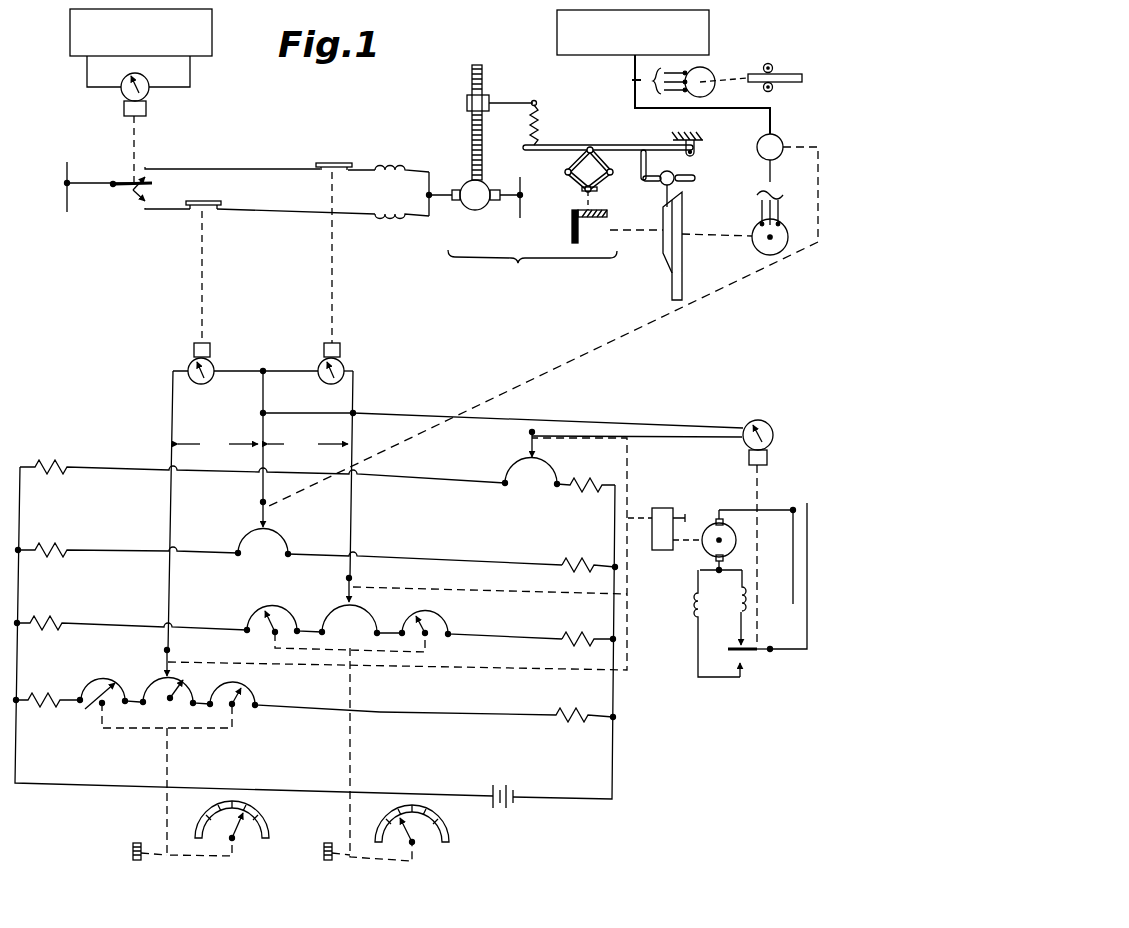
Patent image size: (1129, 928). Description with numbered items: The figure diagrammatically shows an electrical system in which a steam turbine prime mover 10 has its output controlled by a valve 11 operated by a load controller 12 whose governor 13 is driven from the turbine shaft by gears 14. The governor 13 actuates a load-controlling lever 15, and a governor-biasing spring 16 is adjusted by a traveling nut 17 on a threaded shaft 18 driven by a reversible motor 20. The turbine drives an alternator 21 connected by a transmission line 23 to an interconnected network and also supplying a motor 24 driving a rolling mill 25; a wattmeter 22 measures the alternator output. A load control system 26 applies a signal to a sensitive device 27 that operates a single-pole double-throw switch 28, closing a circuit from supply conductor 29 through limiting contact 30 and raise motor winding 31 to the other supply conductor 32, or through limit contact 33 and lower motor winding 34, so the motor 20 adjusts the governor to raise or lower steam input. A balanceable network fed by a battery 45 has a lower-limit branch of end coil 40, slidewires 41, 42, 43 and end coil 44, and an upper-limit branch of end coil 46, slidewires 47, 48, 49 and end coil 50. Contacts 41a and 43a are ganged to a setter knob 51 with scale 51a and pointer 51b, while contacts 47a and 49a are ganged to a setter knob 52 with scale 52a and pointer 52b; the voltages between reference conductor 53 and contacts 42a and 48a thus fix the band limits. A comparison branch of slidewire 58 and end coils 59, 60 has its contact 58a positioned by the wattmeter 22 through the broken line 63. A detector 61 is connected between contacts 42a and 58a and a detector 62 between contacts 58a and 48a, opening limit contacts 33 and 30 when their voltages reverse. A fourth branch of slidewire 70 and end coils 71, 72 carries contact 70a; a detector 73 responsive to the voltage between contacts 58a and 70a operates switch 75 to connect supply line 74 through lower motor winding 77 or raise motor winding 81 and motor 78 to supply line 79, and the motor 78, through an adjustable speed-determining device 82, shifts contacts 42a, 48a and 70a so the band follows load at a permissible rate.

The prime mover 10 is at (663, 250).
The valve 11 is at (661, 186).
The load controller 12 is at (530, 286).
The governor 13 is at (601, 180).
The gears 14 is at (578, 222).
The load-controlling lever 15 is at (568, 146).
The governor-biasing spring 16 is at (538, 128).
The traveling nut 17 is at (467, 104).
The threaded shaft 18 is at (483, 82).
The reversible motor 20 is at (473, 211).
The alternator 21 is at (753, 226).
The wattmeter 22 is at (782, 137).
The transmission line 23 is at (634, 63).
The motor 24 is at (712, 93).
The rolling mill 25 is at (785, 63).
The load control system 26 is at (70, 33).
The sensitive device 27 is at (121, 93).
The single-pole, double-throw switch 28 is at (123, 189).
The supply conductor 29 is at (65, 171).
The limiting contact 30 is at (326, 162).
The raise motor winding 31 is at (389, 167).
The supply conductor 32 is at (521, 208).
The limit contact 33 is at (212, 203).
The lower motor winding 34 is at (386, 219).
The end coil 40 is at (32, 698).
The slidewire 41 is at (105, 678).
The slidewire contact 41a is at (142, 707).
The slidewire 42 is at (176, 699).
The slidewire contact 42a is at (165, 661).
The slidewire 43 is at (257, 693).
The slidewire contact 43a is at (244, 695).
The end coil 44 is at (566, 720).
The battery 45 is at (505, 784).
The end coil 46 is at (50, 617).
The slidewire 47 is at (262, 619).
The slidewire contact 47a is at (268, 635).
The slidewire 48 is at (373, 621).
The slidewire contact 48a is at (347, 591).
The slidewire 49 is at (450, 626).
The slidewire contact 49a is at (421, 622).
The end coil 50 is at (580, 635).
The setter knob 51 is at (132, 848).
The scale 51a is at (258, 820).
The pointer 51b is at (243, 833).
The setter knob 52 is at (325, 856).
The scale 52a is at (392, 827).
The pointer 52b is at (418, 831).
The reference conductor 53 is at (22, 516).
The slidewire 58 is at (290, 541).
The slidewire contact 58a is at (260, 517).
The end coil 59 is at (55, 546).
The end coil 60 is at (570, 563).
The detector 61 is at (193, 352).
The detector 62 is at (341, 353).
The broken line 63 is at (563, 360).
The slidewire 70 is at (548, 464).
The slidewire contact 70a is at (528, 447).
The end coil 71 is at (50, 463).
The end coil 72 is at (599, 487).
The detector 73 is at (757, 419).
The supply line 74 is at (803, 503).
The single-pole, double-throw switch 75 is at (748, 657).
The lower motor winding 77 is at (694, 598).
The motor 78 is at (710, 551).
The supply line 79 is at (792, 505).
The raise motor winding 81 is at (726, 599).
The adjustable speed-determining device 82 is at (668, 508).